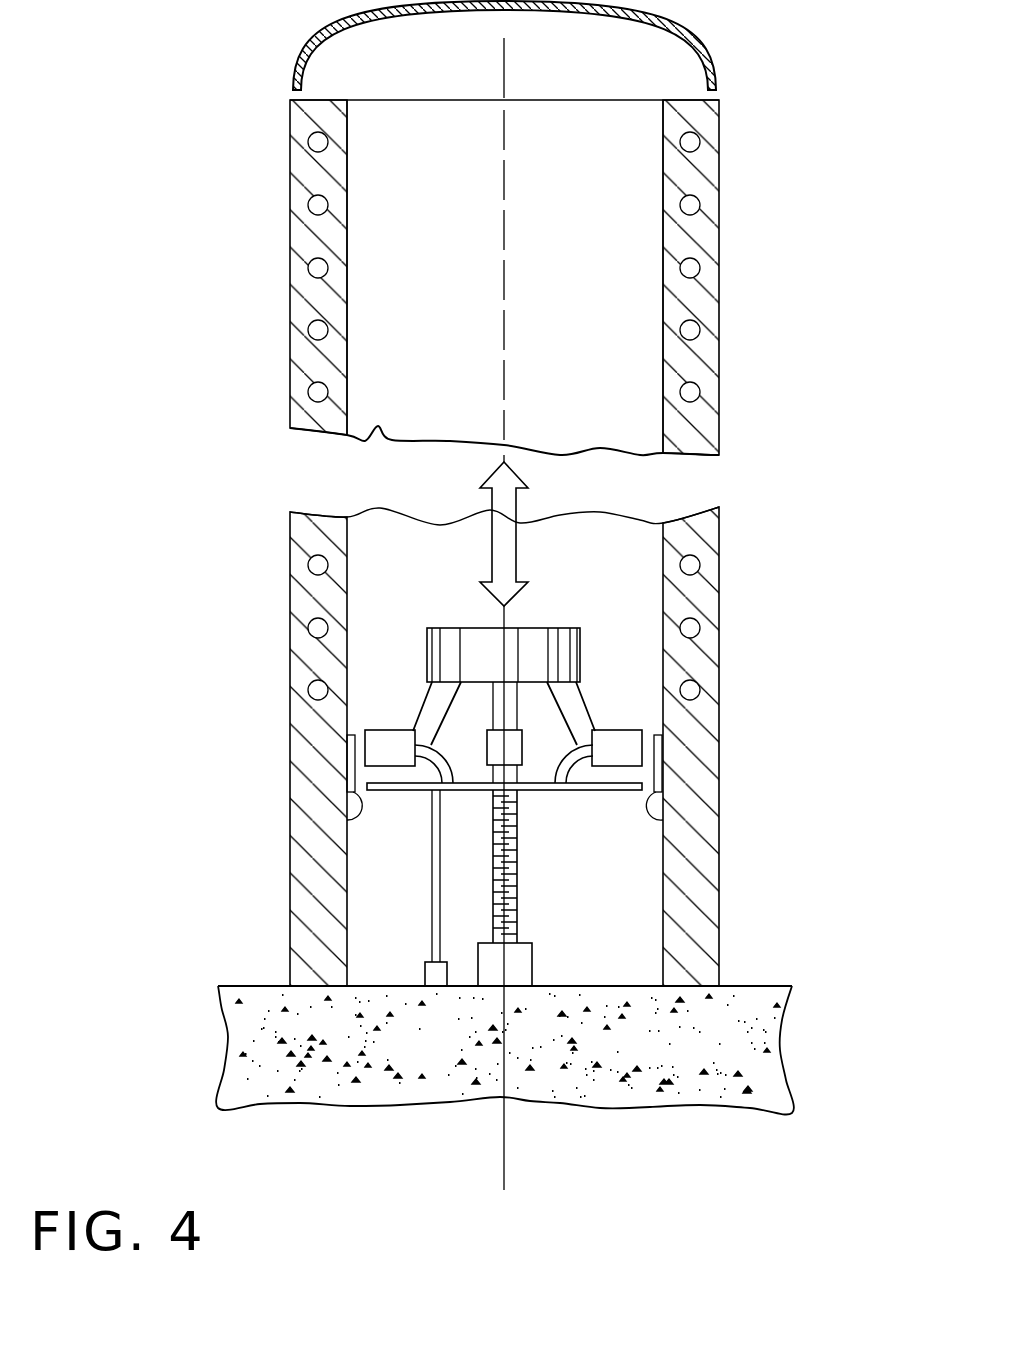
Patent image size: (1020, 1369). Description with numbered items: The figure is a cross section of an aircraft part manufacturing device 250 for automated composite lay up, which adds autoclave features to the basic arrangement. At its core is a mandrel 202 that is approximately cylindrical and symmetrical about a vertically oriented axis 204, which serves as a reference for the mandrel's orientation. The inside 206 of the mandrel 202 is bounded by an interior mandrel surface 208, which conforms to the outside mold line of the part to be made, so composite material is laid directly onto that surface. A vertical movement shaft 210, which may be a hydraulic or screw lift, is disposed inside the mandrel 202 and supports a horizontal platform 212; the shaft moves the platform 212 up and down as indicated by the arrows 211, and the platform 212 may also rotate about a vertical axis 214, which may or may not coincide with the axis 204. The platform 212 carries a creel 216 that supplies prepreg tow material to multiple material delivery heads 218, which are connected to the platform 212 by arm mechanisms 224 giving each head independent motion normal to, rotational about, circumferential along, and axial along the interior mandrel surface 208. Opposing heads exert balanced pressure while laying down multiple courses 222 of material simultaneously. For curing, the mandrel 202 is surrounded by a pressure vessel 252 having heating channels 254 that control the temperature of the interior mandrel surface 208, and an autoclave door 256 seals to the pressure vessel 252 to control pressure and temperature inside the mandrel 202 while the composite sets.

The mandrel 202 is at (726, 160).
The axis 204 is at (540, 1150).
The inside of mandrel 206 is at (538, 108).
The interior mandrel surface 208 is at (349, 158).
The vertical movement shaft 210 is at (517, 915).
The arrows 211 is at (490, 500).
The platform 212 is at (627, 790).
The vertical axis 214 is at (530, 1157).
The creel 216 is at (539, 628).
The material delivery heads 218 is at (373, 737).
The courses 222 is at (347, 822).
The arm mechanisms 224 is at (560, 748).
The device 250 is at (315, 1137).
The pressure vessel 252 is at (289, 221).
The heating channels 254 is at (310, 392).
The autoclave door 256 is at (325, 36).